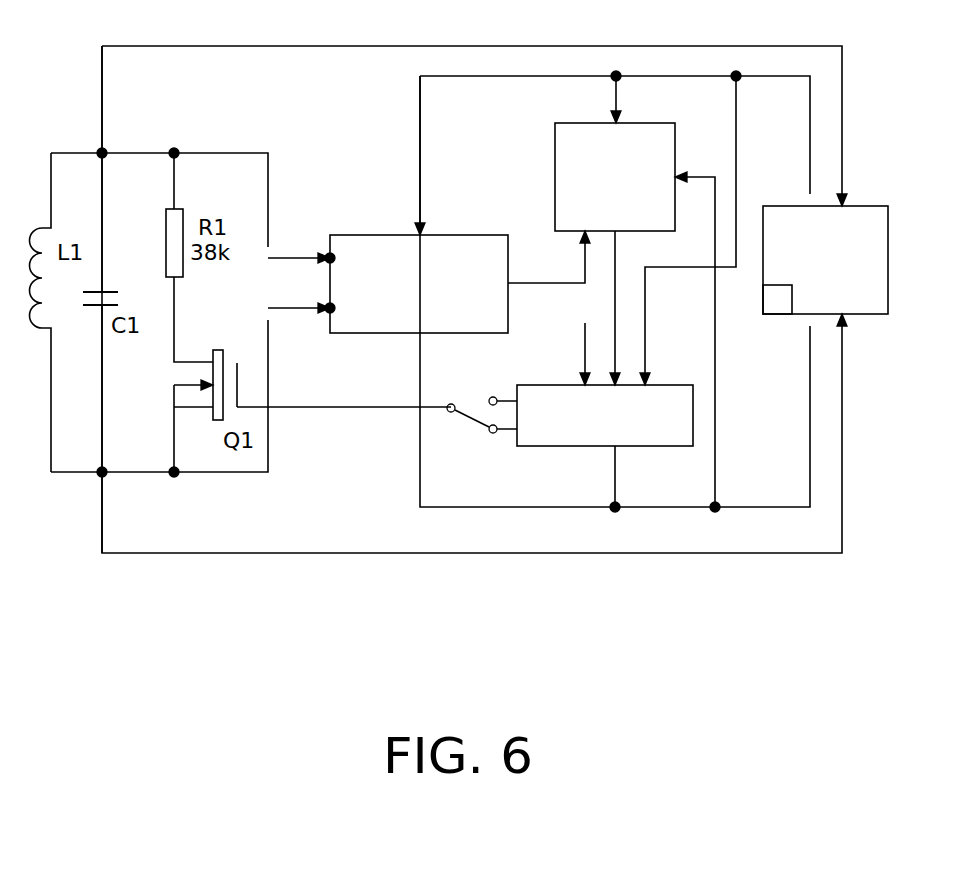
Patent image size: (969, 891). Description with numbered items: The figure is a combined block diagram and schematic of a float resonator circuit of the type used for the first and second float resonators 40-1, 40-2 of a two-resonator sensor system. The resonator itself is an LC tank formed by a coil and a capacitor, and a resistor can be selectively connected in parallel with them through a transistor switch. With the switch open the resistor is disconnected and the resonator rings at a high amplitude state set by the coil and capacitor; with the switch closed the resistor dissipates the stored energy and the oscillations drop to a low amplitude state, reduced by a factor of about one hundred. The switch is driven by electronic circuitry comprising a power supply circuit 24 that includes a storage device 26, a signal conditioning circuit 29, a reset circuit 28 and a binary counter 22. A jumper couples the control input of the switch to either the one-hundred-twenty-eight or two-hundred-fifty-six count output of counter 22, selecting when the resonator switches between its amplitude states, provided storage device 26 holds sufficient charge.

The counter 22 is at (648, 446).
The power supply circuit 24 is at (868, 307).
The storage device 26 is at (777, 300).
The reset circuit 28 is at (567, 178).
The signal conditioning circuit 29 is at (378, 235).
The first float resonator 40-1 is at (474, 355).
The second float resonator 40-2 is at (745, 553).